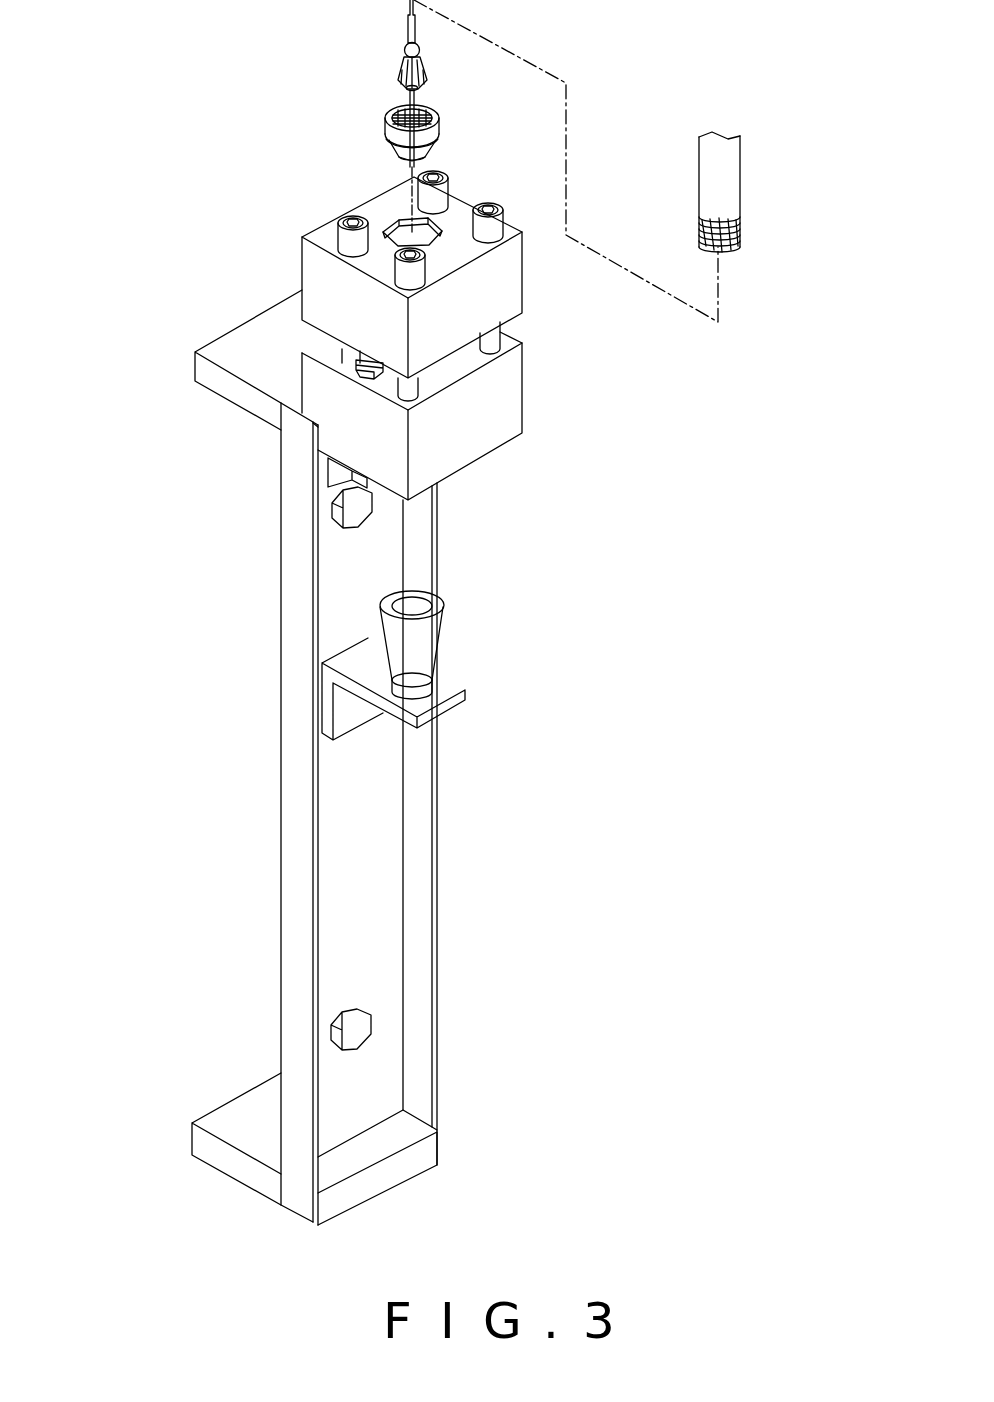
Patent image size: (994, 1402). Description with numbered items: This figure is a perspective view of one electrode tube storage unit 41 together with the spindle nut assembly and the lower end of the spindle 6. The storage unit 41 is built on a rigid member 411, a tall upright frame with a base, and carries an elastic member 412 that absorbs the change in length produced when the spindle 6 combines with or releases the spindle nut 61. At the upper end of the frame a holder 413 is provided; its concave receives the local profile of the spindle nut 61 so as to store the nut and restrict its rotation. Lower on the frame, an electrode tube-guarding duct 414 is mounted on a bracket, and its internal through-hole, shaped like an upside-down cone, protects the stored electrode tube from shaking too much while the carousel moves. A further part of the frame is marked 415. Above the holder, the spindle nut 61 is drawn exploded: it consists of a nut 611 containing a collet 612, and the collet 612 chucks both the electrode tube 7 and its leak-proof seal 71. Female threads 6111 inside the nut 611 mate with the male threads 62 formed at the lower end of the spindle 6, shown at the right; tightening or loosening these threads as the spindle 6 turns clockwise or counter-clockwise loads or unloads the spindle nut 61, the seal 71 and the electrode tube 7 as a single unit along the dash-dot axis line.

The spindle 6 is at (756, 192).
The male threads 62 is at (740, 235).
The electrode tube 7 is at (408, 27).
The leak-proof seal 71 is at (407, 52).
The spindle nut 61 is at (379, 116).
The nut 611 is at (412, 127).
The female threads 6111 is at (432, 115).
The collet 612 is at (402, 88).
The electrode tube storage unit 41 is at (109, 460).
The rigid member 411 is at (300, 481).
The elastic member 412 is at (380, 363).
The holder 413 is at (335, 300).
The electrode tube-guarding duct 414 is at (397, 640).
The mounting plate 415 is at (338, 472).